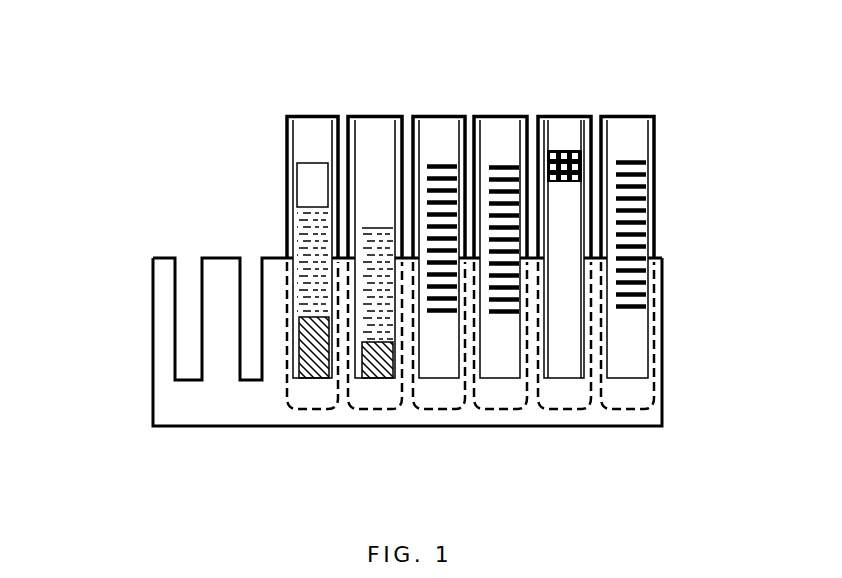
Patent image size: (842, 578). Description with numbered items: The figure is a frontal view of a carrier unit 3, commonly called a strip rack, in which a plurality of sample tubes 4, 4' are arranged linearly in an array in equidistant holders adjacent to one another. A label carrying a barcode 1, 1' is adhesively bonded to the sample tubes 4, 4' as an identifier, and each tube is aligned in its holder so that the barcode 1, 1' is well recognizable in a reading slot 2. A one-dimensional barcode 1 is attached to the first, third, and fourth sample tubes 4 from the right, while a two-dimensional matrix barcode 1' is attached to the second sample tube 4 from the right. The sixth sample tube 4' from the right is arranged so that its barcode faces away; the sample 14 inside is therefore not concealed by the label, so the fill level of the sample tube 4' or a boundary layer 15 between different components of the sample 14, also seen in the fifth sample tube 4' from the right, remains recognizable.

The barcode 1 is at (670, 263).
The two-dimensional barcode 1' is at (564, 96).
The reading slot 2 is at (190, 312).
The carrier unit 3 is at (175, 403).
The sample tube 4 is at (677, 219).
The sample tube 4' is at (269, 170).
The sample 14 is at (322, 238).
The boundary layer 15 is at (382, 347).